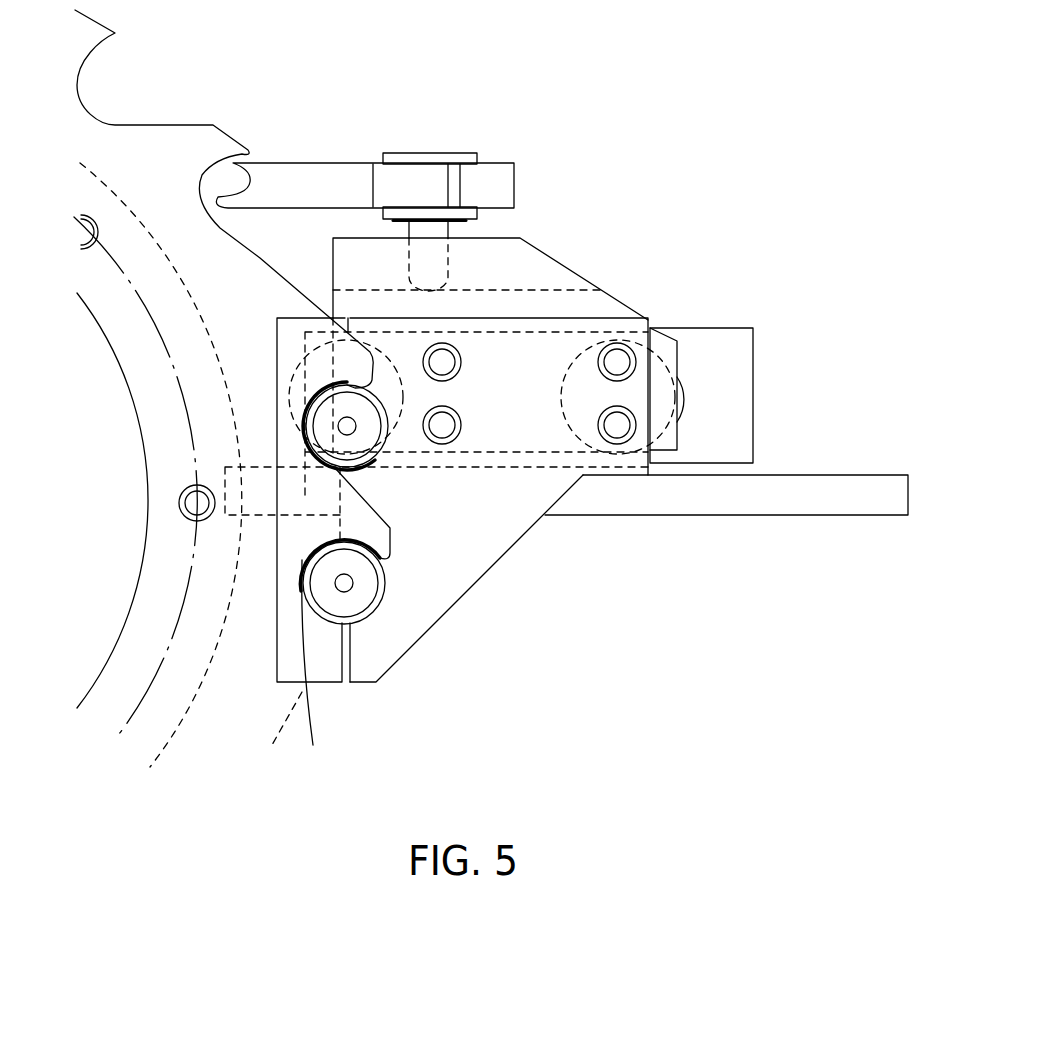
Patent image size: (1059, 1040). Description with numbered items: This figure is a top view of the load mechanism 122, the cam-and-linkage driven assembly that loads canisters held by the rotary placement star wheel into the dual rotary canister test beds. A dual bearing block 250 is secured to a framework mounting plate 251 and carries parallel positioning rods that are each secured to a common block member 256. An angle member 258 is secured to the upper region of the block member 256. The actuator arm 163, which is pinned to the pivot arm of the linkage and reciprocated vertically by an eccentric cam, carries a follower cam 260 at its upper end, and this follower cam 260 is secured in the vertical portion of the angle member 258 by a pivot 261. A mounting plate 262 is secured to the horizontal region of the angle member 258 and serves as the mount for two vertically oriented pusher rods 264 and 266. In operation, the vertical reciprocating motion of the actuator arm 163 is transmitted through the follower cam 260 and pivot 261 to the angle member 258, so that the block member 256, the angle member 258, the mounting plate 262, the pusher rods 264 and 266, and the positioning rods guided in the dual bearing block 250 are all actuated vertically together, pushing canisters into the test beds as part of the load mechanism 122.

The load mechanism 122 is at (472, 645).
The actuator arm 163 is at (293, 180).
The dual bearing block 250 is at (682, 400).
The framework mounting plate 251 is at (732, 498).
The block member 256 is at (717, 343).
The angle member 258 is at (560, 277).
The follower cam 260 is at (450, 164).
The pivot 261 is at (442, 230).
The mounting plate 262 is at (475, 562).
The pusher rod 264 is at (365, 583).
The pusher rod 266 is at (370, 418).